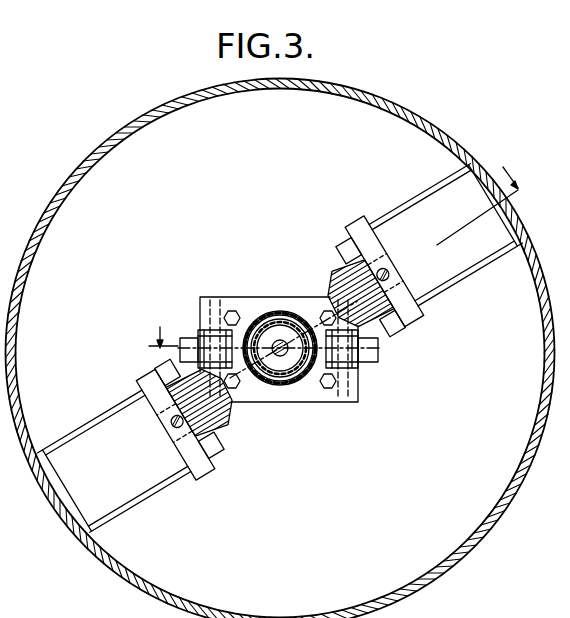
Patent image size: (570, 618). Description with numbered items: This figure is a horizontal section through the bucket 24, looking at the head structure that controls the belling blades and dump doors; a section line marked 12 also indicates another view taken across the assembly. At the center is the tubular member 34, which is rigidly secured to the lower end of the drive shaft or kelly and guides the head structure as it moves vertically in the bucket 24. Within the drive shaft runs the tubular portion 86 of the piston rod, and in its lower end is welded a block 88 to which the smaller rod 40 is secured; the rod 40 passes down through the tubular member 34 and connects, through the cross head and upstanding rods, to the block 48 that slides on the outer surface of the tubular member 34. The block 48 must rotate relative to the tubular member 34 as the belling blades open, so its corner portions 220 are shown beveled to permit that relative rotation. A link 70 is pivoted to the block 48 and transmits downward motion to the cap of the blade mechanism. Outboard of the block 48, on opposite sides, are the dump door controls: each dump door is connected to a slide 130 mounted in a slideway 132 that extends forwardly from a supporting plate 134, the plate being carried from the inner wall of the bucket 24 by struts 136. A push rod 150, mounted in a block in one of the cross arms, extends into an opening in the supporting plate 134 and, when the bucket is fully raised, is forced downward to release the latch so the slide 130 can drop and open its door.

The section line 12- 12 is at (339, 261).
The bucket 24 is at (548, 310).
The tubular member 34 is at (281, 358).
The rod 40 is at (276, 358).
The block 48 is at (313, 402).
The link 70 is at (187, 334).
The tubular portion 86 is at (268, 320).
The block 88 is at (293, 362).
The slide 130 is at (336, 272).
The slideway 132 is at (398, 333).
The supporting plate 134 is at (368, 249).
The struts 136 is at (472, 283).
The push rod 150 is at (389, 275).
The corner portions 220 is at (332, 288).